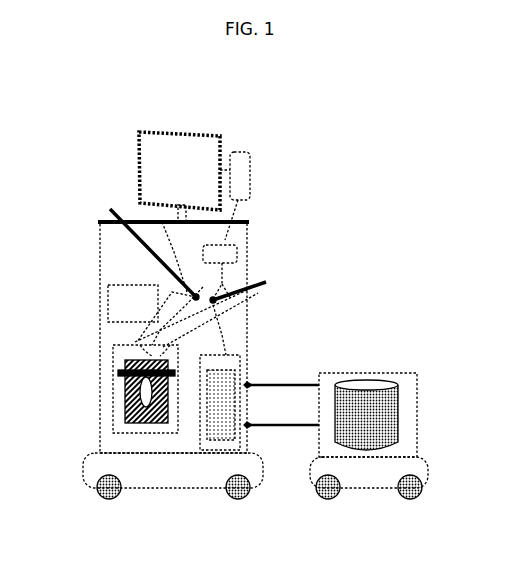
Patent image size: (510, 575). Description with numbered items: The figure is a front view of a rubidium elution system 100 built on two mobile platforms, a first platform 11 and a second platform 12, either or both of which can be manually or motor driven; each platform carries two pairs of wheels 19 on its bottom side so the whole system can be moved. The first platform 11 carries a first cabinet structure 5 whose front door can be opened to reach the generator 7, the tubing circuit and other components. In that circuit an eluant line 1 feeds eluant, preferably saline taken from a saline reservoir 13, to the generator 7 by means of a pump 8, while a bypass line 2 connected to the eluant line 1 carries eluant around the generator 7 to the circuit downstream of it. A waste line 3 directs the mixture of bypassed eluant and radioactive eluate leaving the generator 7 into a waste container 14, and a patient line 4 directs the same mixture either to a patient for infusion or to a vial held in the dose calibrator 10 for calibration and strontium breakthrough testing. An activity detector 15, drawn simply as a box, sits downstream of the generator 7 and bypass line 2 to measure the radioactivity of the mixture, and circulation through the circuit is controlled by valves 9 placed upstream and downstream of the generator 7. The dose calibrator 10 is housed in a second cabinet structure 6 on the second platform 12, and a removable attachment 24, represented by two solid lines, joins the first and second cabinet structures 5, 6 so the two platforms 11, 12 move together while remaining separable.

The rubidium elution system 100 is at (384, 247).
The first cabinet structure 5 is at (108, 260).
The saline reservoir 13 is at (233, 172).
The pump 8 is at (237, 250).
The valves 9 is at (192, 268).
The patient line 4 is at (174, 257).
The eluant line 1 is at (196, 316).
The bypass line 2 is at (208, 320).
The waste line 3 is at (219, 330).
The activity detector 15 is at (128, 305).
The generator 7 is at (130, 392).
The waste container 14 is at (237, 362).
The removable attachment 24 is at (262, 388).
The second cabinet structure 6 is at (418, 382).
The dose calibrator 10 is at (368, 402).
The first platform 11 is at (178, 470).
The second platform 12 is at (373, 470).
The wheels 19 is at (236, 495).